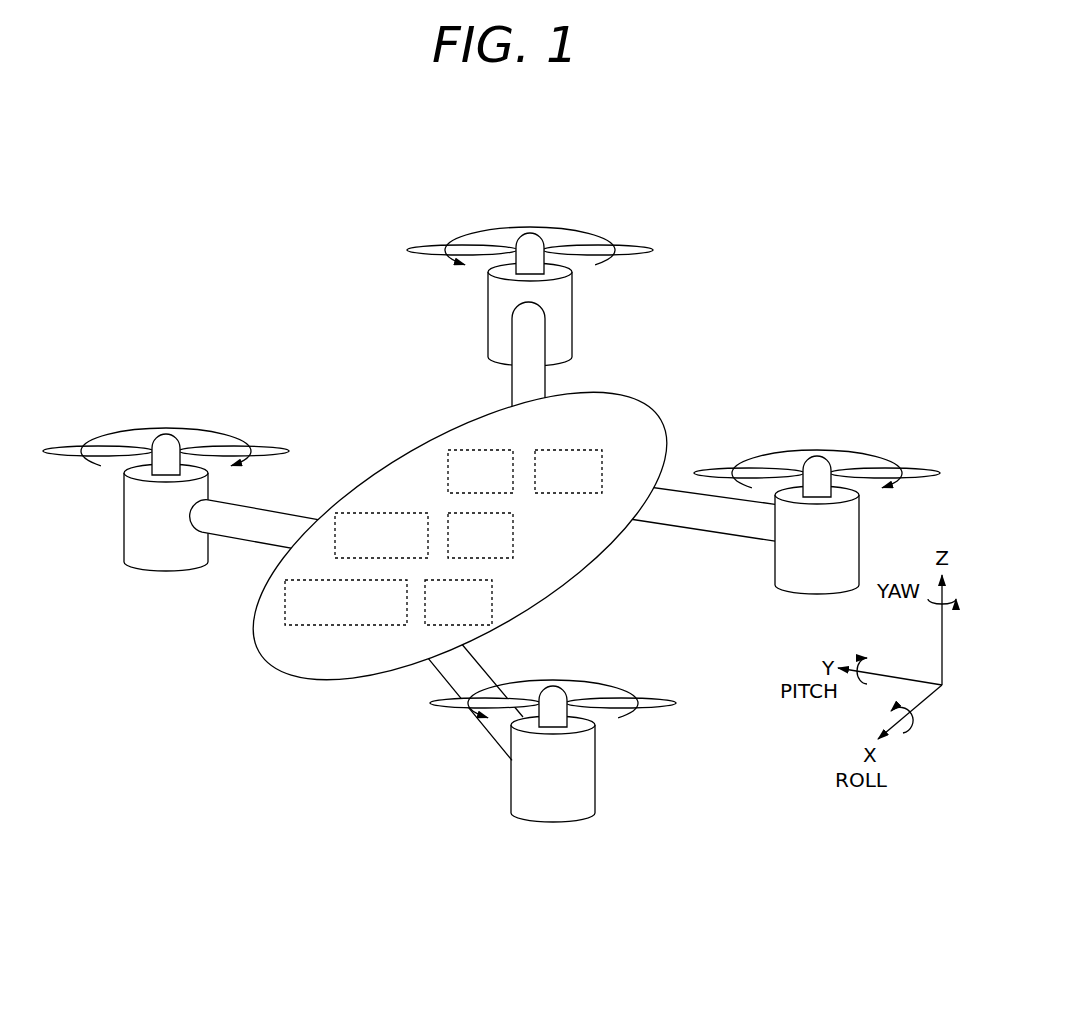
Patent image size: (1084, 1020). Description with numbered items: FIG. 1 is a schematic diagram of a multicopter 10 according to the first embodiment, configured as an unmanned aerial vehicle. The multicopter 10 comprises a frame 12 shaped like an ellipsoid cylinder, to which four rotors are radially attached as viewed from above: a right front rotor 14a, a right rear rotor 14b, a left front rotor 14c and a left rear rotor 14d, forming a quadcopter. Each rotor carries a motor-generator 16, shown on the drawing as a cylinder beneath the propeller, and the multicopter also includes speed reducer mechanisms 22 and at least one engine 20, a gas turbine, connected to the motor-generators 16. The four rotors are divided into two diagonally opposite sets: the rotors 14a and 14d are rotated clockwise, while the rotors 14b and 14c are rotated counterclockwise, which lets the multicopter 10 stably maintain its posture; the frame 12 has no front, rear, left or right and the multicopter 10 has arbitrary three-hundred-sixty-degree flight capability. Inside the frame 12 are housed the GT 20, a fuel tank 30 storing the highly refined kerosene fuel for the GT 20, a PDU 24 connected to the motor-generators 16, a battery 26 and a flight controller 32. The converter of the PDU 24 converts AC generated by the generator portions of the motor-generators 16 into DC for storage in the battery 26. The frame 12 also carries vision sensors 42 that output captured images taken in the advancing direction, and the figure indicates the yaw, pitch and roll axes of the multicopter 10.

The multicopter 10 is at (806, 276).
The frame 12 is at (636, 405).
The RF (Right Front) rotor 14a is at (278, 448).
The RR (Right Rear) rotor 14b is at (633, 261).
The LF (Left Front) rotor 14c is at (663, 718).
The LR (Left Rear) rotor 14d is at (913, 470).
The motor-generator 16 is at (487, 342).
The speed reducer mechanism 22 is at (482, 531).
The engine (GT) 20 is at (514, 529).
The PDU (Power Drive Unit) 24 is at (490, 450).
The battery 26 is at (325, 580).
The fuel tank (FT) 30 is at (493, 600).
The flight controller (FC) 32 is at (574, 450).
The vision sensor 42 is at (378, 513).